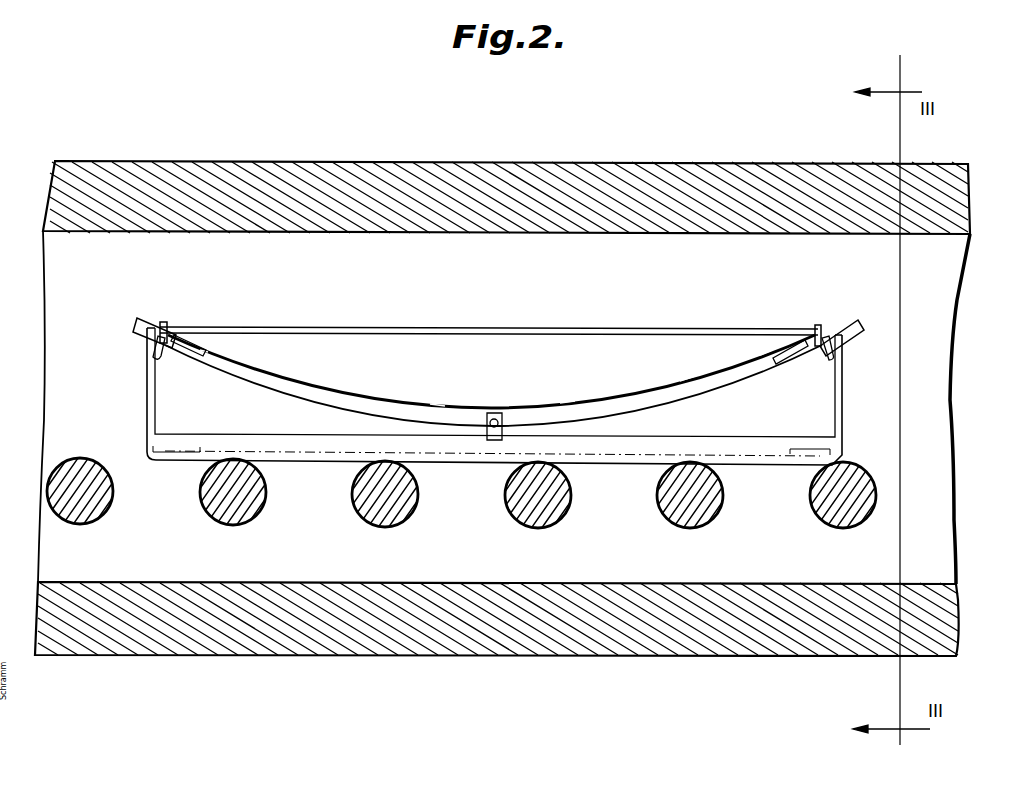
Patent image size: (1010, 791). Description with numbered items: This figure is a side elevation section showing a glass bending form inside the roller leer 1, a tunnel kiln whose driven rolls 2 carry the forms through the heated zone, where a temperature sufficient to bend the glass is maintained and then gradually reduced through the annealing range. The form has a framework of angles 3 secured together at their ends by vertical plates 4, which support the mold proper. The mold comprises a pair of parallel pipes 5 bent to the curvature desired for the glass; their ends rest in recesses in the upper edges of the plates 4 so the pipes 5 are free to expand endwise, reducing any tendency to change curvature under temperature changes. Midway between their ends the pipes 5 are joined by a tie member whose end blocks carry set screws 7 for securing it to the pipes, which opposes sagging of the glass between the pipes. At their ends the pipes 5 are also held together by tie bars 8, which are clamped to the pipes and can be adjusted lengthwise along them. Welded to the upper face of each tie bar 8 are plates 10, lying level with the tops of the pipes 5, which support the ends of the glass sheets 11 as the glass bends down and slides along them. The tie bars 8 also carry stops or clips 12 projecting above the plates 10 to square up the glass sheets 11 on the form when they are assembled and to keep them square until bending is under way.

The roller leer 1 is at (78, 257).
The rolls 2 is at (213, 500).
The angles 3 is at (628, 448).
The vertical plates 4 is at (148, 388).
The pipes 5 is at (862, 328).
The set screws 7 is at (493, 428).
The tie bars 8 is at (157, 355).
The plates 10 is at (183, 355).
The glass sheets 11 is at (742, 333).
The stops or clips 12 is at (820, 332).